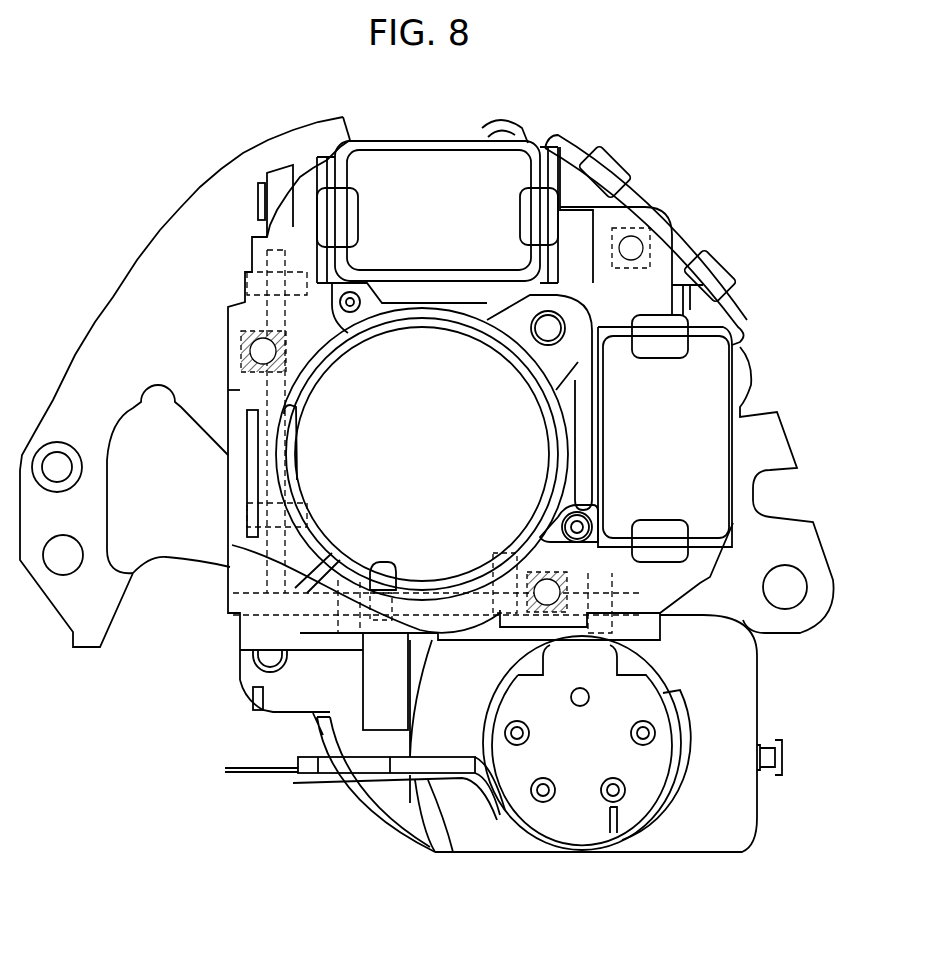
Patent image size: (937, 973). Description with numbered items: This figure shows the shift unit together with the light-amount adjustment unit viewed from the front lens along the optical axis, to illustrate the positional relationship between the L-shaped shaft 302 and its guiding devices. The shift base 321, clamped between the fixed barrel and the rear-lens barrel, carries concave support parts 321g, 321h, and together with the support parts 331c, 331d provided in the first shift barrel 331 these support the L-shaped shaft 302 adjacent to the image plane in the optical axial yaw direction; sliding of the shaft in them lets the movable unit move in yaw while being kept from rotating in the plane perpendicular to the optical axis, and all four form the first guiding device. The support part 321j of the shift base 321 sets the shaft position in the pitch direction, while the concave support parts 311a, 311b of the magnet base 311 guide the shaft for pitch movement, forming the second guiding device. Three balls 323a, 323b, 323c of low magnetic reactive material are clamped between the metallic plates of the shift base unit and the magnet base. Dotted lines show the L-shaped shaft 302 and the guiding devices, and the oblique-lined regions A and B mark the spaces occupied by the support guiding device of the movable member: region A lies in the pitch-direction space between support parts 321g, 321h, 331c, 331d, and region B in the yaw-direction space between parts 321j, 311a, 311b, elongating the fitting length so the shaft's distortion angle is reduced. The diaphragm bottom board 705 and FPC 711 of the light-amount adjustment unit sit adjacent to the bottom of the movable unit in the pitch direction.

The L-shaped shaft 302 is at (267, 620).
The magnet base 311 is at (607, 217).
The concave support part 311a is at (245, 298).
The concave support part 311b is at (240, 553).
The shift base 321 is at (807, 543).
The concave support part 321g is at (330, 620).
The concave support part 321h is at (640, 618).
The support part 321j is at (247, 500).
The ball 323a is at (547, 592).
The ball 323b is at (643, 240).
The ball 323c is at (263, 351).
The first shift barrel 331 is at (560, 358).
The support part 331c is at (377, 583).
The support part 331d is at (500, 565).
The diaphragm bottom board 705 is at (477, 847).
The FPC 711 is at (573, 832).
The support guiding device of the movable member A is at (543, 553).
The support guiding device of the movable member B is at (245, 345).